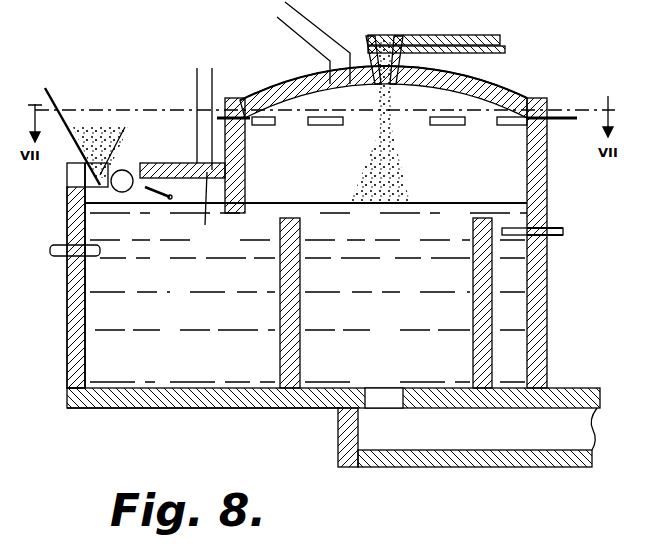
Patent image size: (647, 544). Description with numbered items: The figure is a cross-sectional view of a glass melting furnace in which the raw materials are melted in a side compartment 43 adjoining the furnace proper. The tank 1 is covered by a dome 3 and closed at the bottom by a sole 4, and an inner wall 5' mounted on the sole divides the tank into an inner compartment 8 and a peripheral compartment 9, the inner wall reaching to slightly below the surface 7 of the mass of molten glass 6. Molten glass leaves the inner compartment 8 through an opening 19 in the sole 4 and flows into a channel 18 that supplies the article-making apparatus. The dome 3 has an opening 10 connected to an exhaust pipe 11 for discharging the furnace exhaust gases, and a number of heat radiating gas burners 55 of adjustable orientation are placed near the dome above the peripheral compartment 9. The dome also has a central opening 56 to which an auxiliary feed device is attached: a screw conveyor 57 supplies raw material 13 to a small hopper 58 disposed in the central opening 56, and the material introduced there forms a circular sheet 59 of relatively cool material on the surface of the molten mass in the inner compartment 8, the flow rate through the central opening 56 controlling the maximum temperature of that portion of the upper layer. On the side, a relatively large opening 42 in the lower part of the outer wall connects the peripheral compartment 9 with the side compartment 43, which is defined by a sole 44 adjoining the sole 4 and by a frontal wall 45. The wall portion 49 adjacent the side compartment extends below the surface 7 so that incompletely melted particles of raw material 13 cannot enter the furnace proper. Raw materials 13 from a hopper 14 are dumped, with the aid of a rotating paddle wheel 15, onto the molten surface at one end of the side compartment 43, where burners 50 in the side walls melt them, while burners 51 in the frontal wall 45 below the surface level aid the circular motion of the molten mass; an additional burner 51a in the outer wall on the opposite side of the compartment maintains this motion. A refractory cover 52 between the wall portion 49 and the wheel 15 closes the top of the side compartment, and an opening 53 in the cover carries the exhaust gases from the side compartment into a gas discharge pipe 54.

The tank 1 is at (547, 166).
The dome 3 is at (525, 105).
The sole 4 is at (330, 410).
The inner wall 5' is at (386, 303).
The mass of molten glass 6 is at (447, 220).
The surface 7 is at (497, 206).
The inner compartment 8 is at (418, 303).
The peripheral compartment 9 is at (516, 303).
The opening 10 is at (335, 76).
The exhaust pipe 11 is at (300, 27).
The raw materials 13 is at (115, 160).
The hopper 14 is at (125, 127).
The rotating paddle wheel 15 is at (67, 170).
The channel 18 is at (540, 425).
The opening 19 is at (385, 392).
The opening 42 is at (245, 228).
The side compartment 43 is at (110, 335).
The sole 44 is at (145, 410).
The frontal wall 45 is at (78, 293).
The wall portion 49 is at (247, 195).
The burners 50 is at (172, 203).
The burners 51 is at (70, 250).
The additional burner 51a is at (552, 235).
The cover 52 is at (182, 158).
The opening 53 is at (211, 213).
The gas discharge pipe 54 is at (200, 84).
The heat radiating gas burners 55 is at (322, 126).
The central opening 56 is at (390, 92).
The screw conveyor 57 is at (405, 40).
The small hopper 58 is at (368, 42).
The circular sheet 59 is at (402, 200).